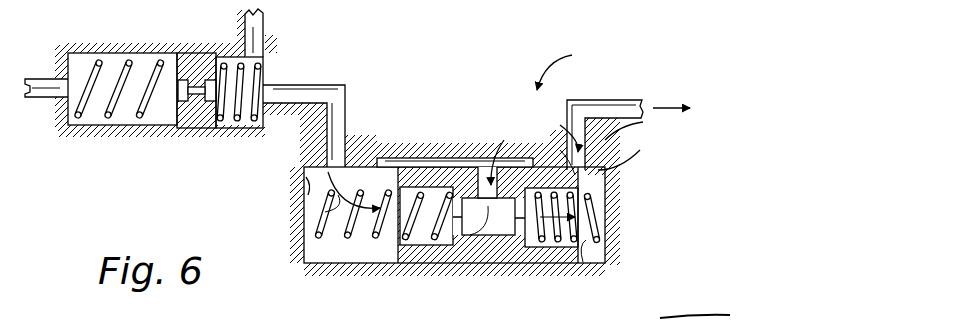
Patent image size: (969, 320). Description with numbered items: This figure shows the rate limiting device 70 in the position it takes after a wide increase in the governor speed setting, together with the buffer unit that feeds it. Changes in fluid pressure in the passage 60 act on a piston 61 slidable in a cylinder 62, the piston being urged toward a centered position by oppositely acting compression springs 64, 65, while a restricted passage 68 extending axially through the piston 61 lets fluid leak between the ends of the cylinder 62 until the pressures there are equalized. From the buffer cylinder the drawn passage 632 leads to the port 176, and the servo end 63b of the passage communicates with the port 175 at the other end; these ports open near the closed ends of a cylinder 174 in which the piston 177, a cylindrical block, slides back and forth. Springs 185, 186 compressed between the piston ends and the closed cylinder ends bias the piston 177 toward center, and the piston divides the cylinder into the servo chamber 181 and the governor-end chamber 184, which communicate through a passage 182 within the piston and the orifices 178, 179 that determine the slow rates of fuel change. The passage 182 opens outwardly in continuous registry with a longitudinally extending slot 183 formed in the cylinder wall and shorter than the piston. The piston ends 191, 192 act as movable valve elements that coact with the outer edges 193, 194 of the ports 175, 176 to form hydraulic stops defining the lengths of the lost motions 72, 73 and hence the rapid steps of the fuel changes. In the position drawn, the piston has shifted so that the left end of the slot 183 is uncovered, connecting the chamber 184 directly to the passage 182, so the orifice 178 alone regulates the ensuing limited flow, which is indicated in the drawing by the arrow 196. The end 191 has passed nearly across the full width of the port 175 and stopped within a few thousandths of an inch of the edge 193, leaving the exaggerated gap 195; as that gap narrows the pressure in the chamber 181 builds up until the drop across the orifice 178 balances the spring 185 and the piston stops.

The passage 60 is at (50, 76).
The piston 61 is at (196, 62).
The cylinder 62 is at (130, 112).
The compression spring 64 is at (118, 82).
The compression spring 65 is at (262, 68).
The restricted passage 68 is at (195, 100).
The passage 632 is at (340, 117).
The servo end of passage 63b is at (605, 104).
The rate limiting device 70 is at (568, 68).
The lost motion 72 is at (523, 8).
The lost motion 73 is at (423, 8).
The cylinder 174 is at (305, 265).
The port 175 is at (562, 130).
The port 176 is at (345, 150).
The piston 177 is at (440, 263).
The orifice 178 is at (497, 245).
The orifice 179 is at (483, 250).
The servo end chamber 181 is at (595, 250).
The passage 182 is at (507, 150).
The slot 183 is at (455, 160).
The governor end chamber 184 is at (305, 248).
The spring 185 is at (605, 212).
The spring 186 is at (325, 212).
The piston end 191 is at (585, 263).
The piston end 192 is at (397, 263).
The outer edge of port 193 is at (638, 153).
The outer edge of port 194 is at (305, 180).
The gap 195 is at (643, 125).
The flow path 196 is at (375, 168).